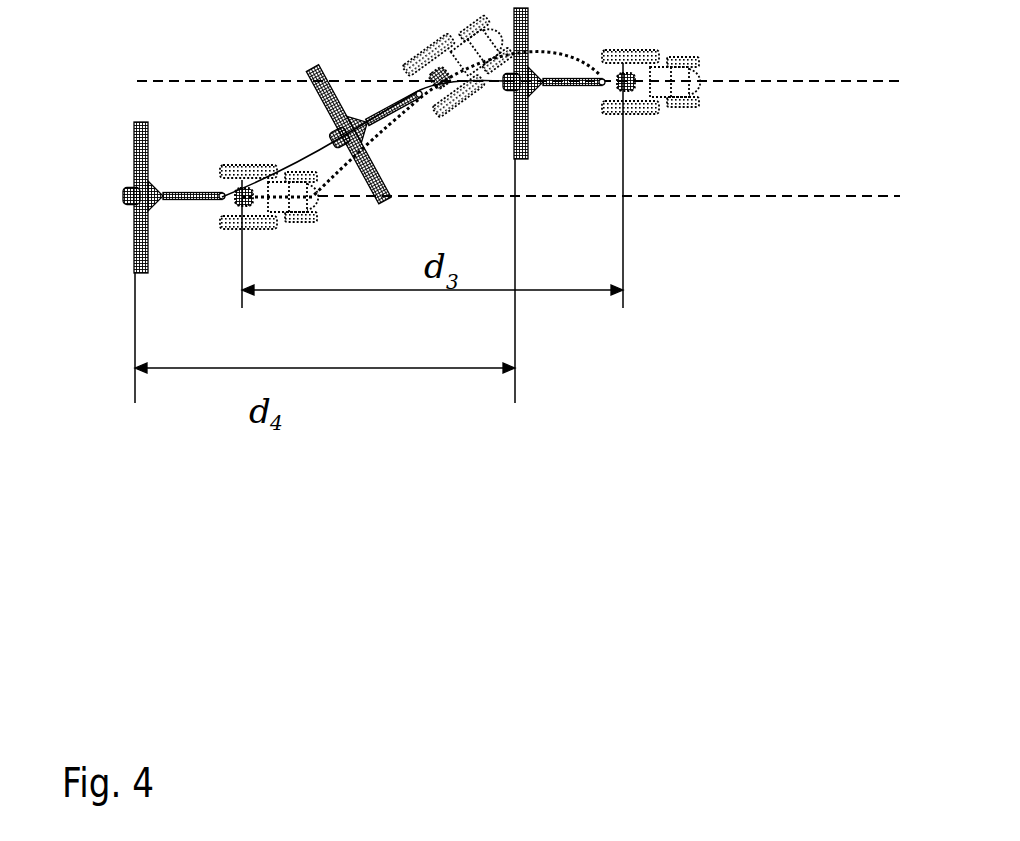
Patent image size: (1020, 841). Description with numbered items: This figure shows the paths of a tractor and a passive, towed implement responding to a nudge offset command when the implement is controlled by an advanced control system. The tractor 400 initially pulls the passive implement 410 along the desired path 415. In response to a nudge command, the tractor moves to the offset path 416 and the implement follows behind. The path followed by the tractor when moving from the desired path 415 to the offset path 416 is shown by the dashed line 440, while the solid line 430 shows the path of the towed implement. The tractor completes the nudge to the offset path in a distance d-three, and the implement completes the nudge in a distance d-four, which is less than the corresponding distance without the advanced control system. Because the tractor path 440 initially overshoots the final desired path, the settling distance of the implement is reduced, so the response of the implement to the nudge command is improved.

The tractor 400 is at (235, 162).
The passive implement 410 is at (126, 156).
The desired path 415 is at (885, 202).
The offset path 416 is at (885, 88).
The solid line 430 is at (303, 153).
The dashed line 440 is at (398, 128).